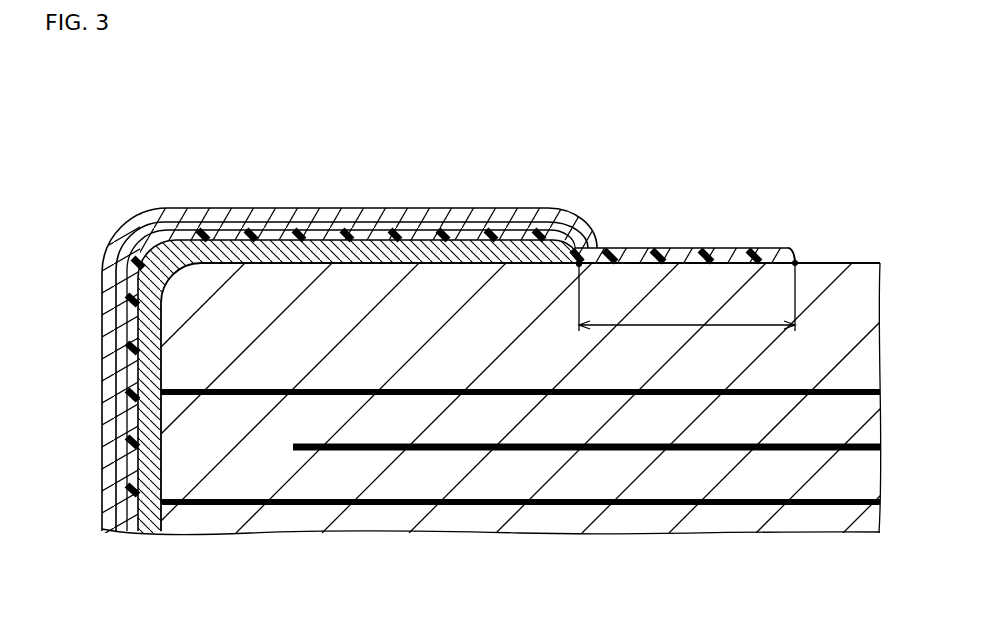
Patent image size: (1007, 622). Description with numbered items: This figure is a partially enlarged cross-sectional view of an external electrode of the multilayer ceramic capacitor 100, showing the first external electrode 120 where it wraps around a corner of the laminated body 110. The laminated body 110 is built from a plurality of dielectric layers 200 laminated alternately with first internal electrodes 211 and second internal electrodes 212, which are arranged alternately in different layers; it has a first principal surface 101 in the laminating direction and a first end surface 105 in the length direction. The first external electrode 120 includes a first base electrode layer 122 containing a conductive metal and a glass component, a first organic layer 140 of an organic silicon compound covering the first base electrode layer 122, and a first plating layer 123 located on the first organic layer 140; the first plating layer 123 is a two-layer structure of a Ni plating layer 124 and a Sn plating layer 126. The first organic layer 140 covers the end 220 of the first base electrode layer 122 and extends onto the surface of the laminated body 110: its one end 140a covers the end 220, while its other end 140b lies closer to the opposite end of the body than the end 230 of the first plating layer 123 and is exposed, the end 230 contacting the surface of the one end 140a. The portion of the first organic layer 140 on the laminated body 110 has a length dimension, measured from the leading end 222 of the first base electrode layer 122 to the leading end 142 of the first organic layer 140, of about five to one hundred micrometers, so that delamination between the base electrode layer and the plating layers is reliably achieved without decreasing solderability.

The multilayer ceramic capacitor 100 is at (245, 114).
The first external electrode 120 is at (189, 194).
The first plating layer 123 is at (370, 146).
The Sn plating layer 126 is at (265, 210).
The Ni plating layer 124 is at (334, 224).
The first base electrode layer 122 is at (408, 252).
The end of the first base electrode layer 220 is at (545, 247).
The end of the first plating layer 230 is at (588, 233).
The one end of the first organic layer 140a is at (595, 257).
The first organic layer 140 is at (712, 250).
The other end of the first organic layer 140b is at (790, 260).
The leading end of the first organic layer 142 is at (797, 261).
The first principal surface 101 is at (858, 262).
The leading end of the first base electrode layer 222 is at (582, 266).
The first end surface 105 is at (160, 421).
The laminated body 110 is at (262, 540).
The dielectric layers 200 is at (360, 517).
The first internal electrodes 211 is at (480, 504).
The second internal electrodes 212 is at (553, 447).